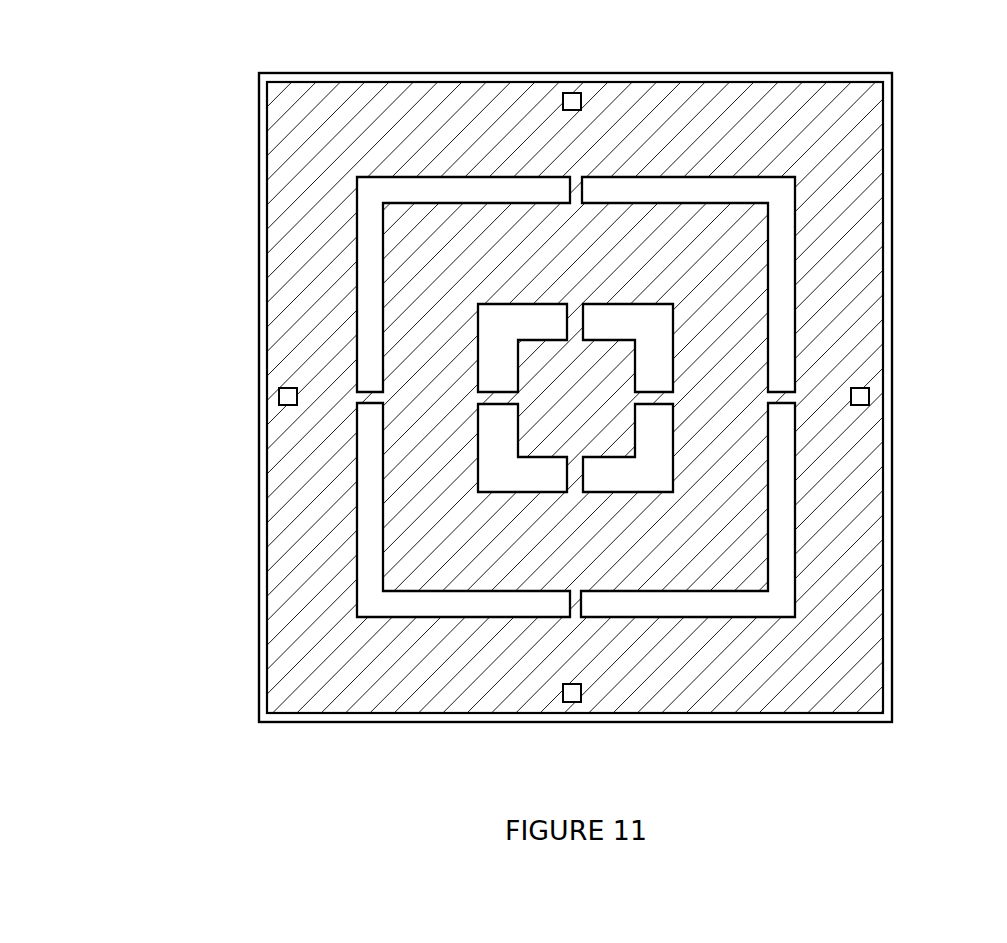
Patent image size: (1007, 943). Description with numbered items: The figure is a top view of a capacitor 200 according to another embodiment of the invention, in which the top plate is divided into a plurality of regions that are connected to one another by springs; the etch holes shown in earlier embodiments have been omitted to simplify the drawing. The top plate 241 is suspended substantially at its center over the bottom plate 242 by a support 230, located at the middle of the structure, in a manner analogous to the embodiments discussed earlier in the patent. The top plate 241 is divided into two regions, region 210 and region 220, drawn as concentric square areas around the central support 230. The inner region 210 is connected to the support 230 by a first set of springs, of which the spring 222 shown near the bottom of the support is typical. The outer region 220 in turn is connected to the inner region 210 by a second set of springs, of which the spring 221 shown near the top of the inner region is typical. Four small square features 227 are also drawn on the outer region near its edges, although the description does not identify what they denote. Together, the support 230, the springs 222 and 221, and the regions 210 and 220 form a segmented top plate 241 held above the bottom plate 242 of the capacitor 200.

The capacitor 200 is at (138, 117).
The region 210 is at (702, 260).
The region 220 is at (702, 140).
The spring 221 is at (575, 206).
The spring 222 is at (577, 500).
The vias 227 is at (573, 100).
The support 230 is at (598, 412).
The top plate 241 is at (873, 104).
The bottom plate 242 is at (885, 199).